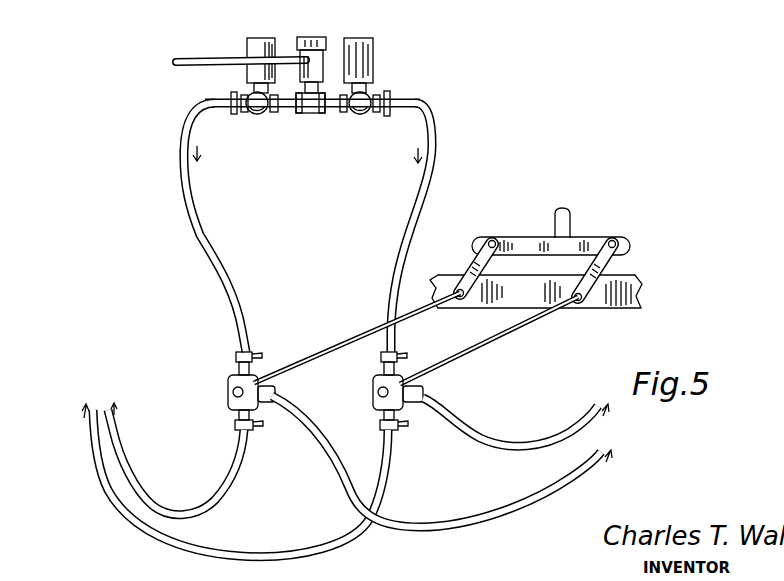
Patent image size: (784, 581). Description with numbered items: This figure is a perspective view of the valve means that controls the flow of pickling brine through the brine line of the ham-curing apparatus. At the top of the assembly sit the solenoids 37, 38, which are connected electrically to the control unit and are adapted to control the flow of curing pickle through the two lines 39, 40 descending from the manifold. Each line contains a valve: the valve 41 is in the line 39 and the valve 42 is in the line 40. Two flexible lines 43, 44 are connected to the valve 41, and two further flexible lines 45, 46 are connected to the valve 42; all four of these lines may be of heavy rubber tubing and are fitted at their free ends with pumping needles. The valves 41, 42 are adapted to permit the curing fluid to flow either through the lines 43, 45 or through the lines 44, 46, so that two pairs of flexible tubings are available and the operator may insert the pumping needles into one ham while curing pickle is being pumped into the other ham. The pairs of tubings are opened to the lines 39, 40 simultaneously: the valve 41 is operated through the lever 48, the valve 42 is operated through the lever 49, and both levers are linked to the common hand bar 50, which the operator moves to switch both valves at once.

The solenoid 37 is at (373, 57).
The solenoid 38 is at (249, 43).
The line 39 is at (413, 207).
The line 40 is at (193, 210).
The valve 41 is at (375, 390).
The valve 42 is at (229, 390).
The flexible line 43 is at (470, 430).
The flexible line 44 is at (381, 490).
The flexible line 45 is at (337, 478).
The flexible line 46 is at (233, 455).
The lever 48 is at (610, 266).
The lever 49 is at (479, 264).
The hand bar 50 is at (568, 221).